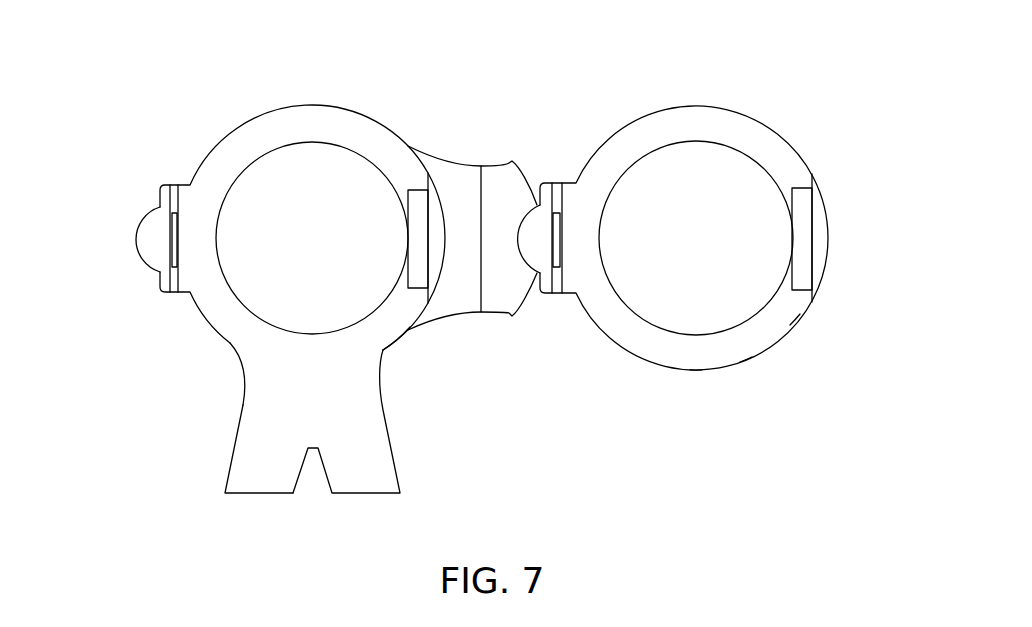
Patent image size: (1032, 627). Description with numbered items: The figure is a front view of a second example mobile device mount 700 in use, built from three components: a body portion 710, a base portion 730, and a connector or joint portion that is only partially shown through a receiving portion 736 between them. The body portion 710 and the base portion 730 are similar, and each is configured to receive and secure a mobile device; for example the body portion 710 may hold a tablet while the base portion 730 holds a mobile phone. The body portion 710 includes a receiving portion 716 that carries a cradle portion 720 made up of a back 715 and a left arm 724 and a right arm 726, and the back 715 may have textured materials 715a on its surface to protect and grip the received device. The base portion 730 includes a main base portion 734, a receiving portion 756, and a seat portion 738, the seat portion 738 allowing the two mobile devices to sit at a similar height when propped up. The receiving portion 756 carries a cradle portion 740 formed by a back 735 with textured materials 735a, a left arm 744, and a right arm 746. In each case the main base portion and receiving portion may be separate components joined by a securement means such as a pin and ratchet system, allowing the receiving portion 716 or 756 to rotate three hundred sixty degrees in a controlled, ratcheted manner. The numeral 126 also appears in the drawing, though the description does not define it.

The mobile device mount 700 is at (696, 387).
The body portion 710 is at (761, 372).
The back 715 is at (714, 222).
The textured materials 715a is at (553, 249).
The receiving portion 716 is at (775, 319).
The cradle portion 720 is at (833, 104).
The left arm 724 is at (824, 248).
The right arm 726 is at (543, 226).
The base portion 730 is at (413, 402).
The main base portion 734 is at (457, 305).
The back 735 is at (303, 238).
The textured materials 735a is at (170, 237).
The receiving portion 736 is at (499, 173).
The seat portion 738 is at (247, 447).
The cradle portion 740 is at (175, 104).
The left arm 744 is at (432, 227).
The right arm 746 is at (147, 251).
The receiving portion 756 is at (381, 343).
The frame 126 is at (232, 319).